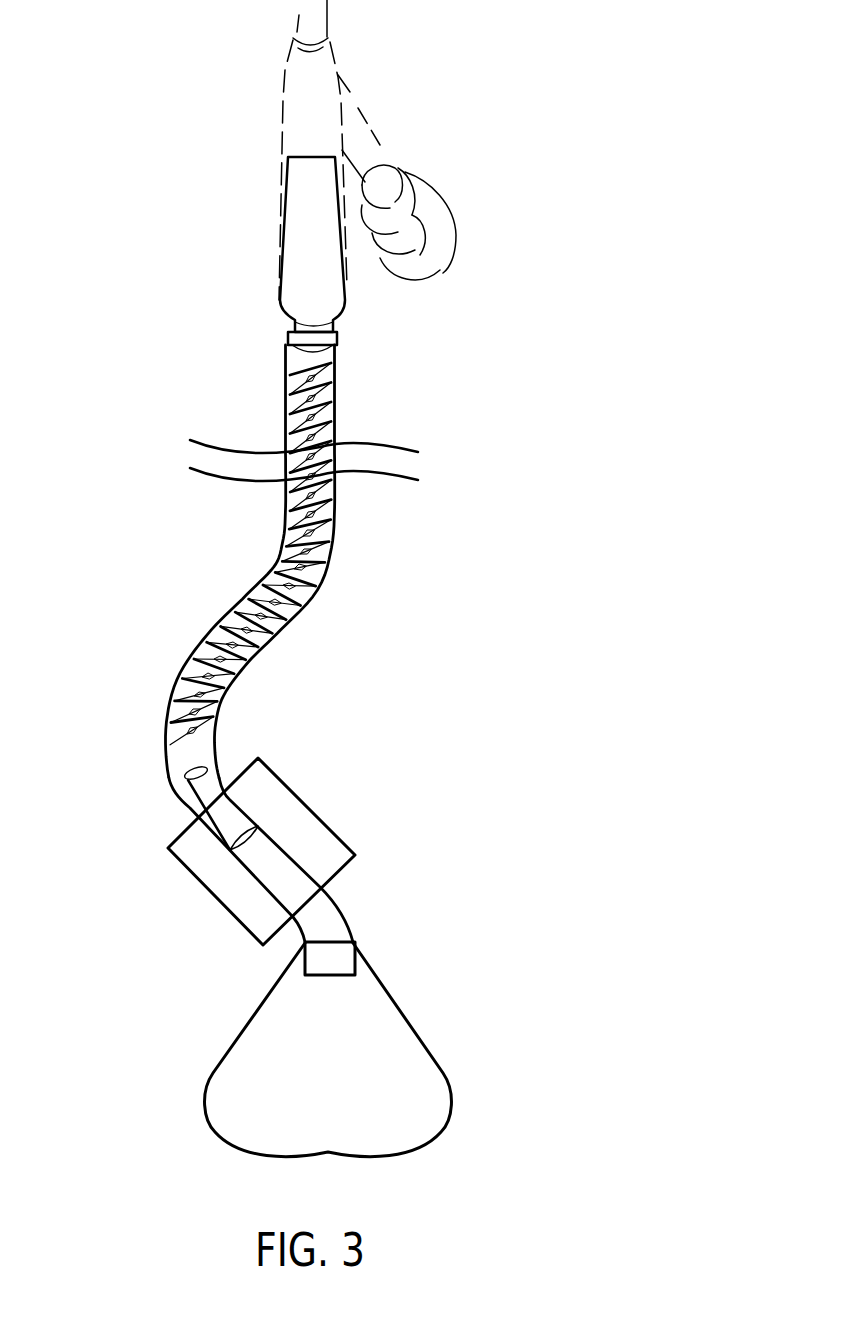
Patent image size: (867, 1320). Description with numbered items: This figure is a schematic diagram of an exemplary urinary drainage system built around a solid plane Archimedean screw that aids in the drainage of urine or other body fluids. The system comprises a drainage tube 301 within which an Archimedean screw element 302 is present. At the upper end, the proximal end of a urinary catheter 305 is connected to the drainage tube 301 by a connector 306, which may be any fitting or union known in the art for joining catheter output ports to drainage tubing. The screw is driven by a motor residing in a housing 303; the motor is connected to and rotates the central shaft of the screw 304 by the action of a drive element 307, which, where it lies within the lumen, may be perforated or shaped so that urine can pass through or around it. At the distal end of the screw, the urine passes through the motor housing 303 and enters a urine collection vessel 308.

The drainage tube 301 is at (207, 627).
The Archimedean screw element 302 is at (325, 580).
The housing 303 is at (208, 892).
The central shaft of the screw 304 is at (197, 802).
The urinary catheter 305 is at (282, 190).
The connector 306 is at (314, 314).
The drive element 307 is at (257, 825).
The urine collection vessel 308 is at (410, 1027).